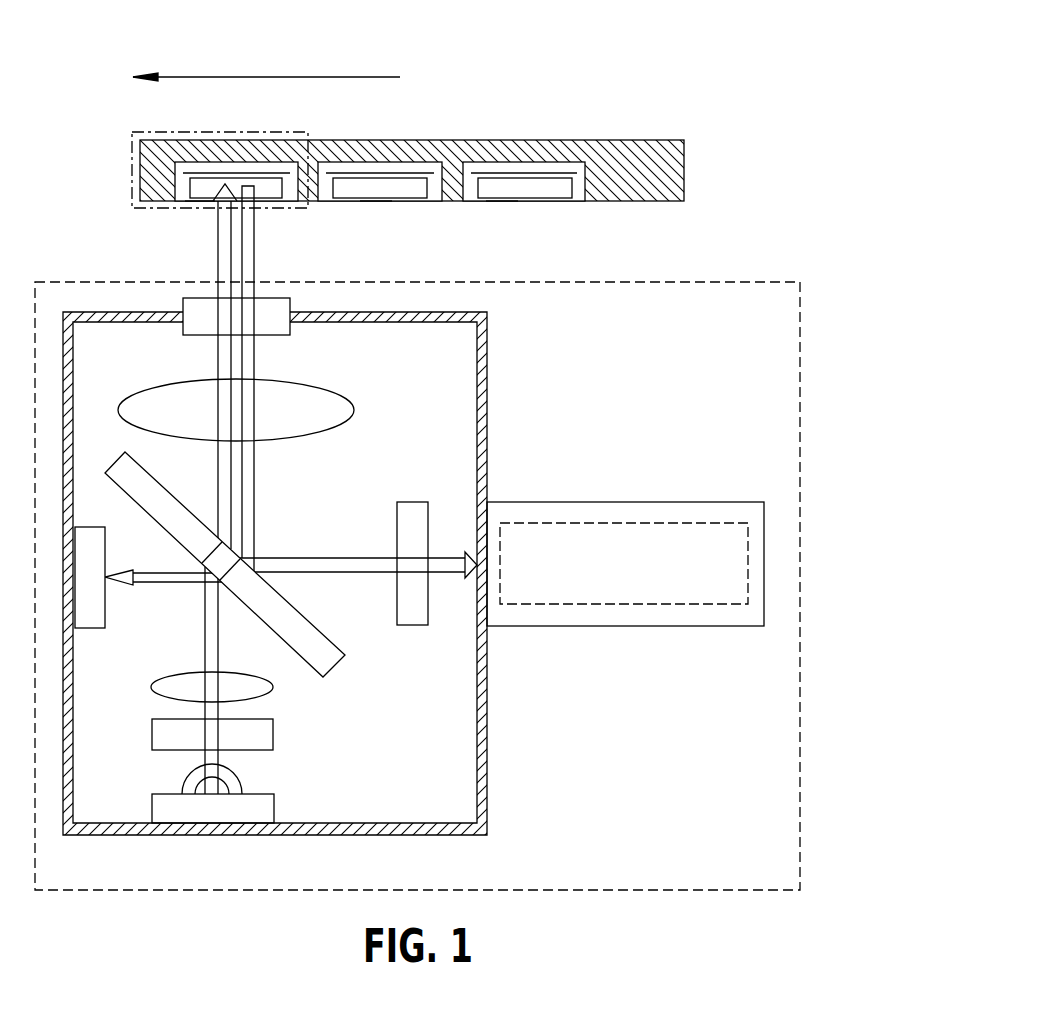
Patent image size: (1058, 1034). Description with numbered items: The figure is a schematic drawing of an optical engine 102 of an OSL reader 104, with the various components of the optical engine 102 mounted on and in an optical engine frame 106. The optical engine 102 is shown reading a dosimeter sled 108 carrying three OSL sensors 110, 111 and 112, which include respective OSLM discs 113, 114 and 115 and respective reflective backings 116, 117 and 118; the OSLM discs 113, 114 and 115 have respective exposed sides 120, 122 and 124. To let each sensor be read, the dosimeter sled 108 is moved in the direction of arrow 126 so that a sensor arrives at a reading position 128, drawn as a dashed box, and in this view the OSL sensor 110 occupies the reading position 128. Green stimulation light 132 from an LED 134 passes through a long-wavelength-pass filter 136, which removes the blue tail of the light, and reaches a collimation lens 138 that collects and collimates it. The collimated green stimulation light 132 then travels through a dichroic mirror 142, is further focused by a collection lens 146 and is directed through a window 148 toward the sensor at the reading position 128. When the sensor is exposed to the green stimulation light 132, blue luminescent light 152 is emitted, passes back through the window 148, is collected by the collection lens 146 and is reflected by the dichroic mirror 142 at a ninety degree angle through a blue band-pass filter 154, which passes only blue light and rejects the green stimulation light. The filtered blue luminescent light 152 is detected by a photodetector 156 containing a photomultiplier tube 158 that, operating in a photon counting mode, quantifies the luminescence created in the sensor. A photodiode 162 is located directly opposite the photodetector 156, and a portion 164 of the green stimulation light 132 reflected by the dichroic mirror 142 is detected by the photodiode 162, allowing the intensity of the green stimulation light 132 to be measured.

The optical engine 102 is at (413, 509).
The OSL reader 104 is at (801, 585).
The optical engine frame 106 is at (479, 333).
The dosimeter sled 108 is at (674, 162).
The OSL sensor 110 is at (246, 170).
The OSL sensor 111 is at (374, 166).
The OSL sensor 112 is at (526, 166).
The OSLM disc 113 is at (208, 185).
The OSLM disc 114 is at (358, 187).
The OSLM disc 115 is at (503, 187).
The reflective backing 116 is at (248, 185).
The reflective backing 117 is at (388, 185).
The reflective backing 118 is at (542, 187).
The exposed side 120 is at (201, 203).
The exposed side 122 is at (377, 204).
The exposed side 124 is at (502, 204).
The arrow 126 is at (328, 75).
The reading position 128 is at (130, 158).
The green stimulation light 132 is at (205, 630).
The LED 134 is at (262, 812).
The long-wavelength-pass filter 136 is at (258, 735).
The collimation lens 138 is at (253, 685).
The dichroic mirror 142 is at (347, 669).
The collection lens 146 is at (318, 386).
The window 148 is at (183, 332).
The blue luminescent light 152 is at (249, 493).
The blue band-pass filter 154 is at (412, 502).
The photodetector 156 is at (560, 624).
The photomultiplier tube 158 is at (651, 604).
The photodiode 162 is at (90, 630).
The portion of green stimulation light 164 is at (170, 583).